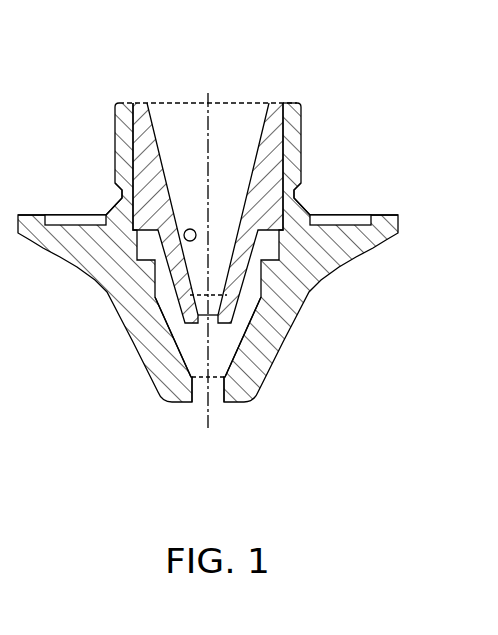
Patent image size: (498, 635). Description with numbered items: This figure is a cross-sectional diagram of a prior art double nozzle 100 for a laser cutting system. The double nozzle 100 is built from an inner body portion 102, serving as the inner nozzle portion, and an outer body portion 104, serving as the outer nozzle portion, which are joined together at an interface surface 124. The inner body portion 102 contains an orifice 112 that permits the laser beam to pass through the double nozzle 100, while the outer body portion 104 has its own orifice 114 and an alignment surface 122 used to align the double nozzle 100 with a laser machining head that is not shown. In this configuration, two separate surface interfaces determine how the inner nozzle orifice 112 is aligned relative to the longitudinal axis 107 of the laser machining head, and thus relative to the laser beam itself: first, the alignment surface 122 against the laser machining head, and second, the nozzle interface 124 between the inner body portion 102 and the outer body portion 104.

The double nozzle 100 is at (218, 252).
The inner body portion 102 is at (143, 101).
The outer body portion 104 is at (92, 270).
The longitudinal axis 107 is at (218, 95).
The orifice 112 is at (190, 334).
The orifice 114 is at (226, 417).
The alignment surface 122 is at (318, 196).
The interface surface 124 is at (285, 94).